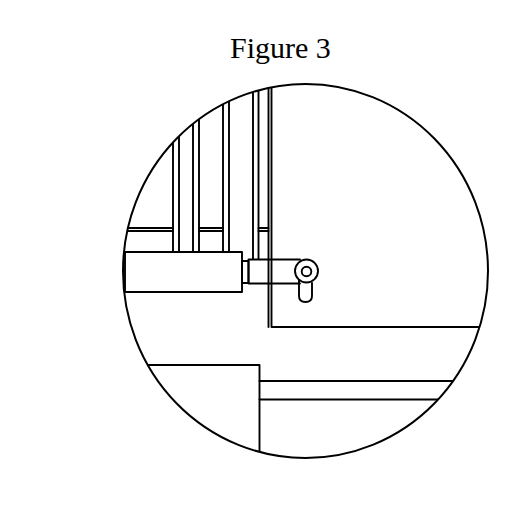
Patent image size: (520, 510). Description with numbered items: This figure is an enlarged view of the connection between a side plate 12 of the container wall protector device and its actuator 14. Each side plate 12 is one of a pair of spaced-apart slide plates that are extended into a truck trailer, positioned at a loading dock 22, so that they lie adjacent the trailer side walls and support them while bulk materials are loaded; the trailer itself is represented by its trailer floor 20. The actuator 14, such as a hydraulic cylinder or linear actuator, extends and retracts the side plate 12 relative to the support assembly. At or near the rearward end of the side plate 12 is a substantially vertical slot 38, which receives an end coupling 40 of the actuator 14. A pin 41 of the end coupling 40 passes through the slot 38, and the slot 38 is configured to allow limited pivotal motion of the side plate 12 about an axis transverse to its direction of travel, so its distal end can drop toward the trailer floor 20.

The side plate 12 is at (382, 196).
The actuator 14 is at (152, 281).
The trailer floor 20 is at (380, 382).
The loading dock 22 is at (229, 409).
The slot 38 is at (312, 290).
The end coupling 40 is at (261, 286).
The pin 41 is at (302, 262).